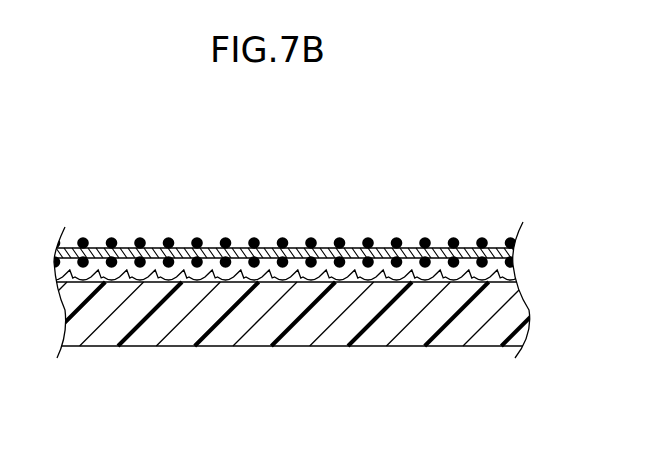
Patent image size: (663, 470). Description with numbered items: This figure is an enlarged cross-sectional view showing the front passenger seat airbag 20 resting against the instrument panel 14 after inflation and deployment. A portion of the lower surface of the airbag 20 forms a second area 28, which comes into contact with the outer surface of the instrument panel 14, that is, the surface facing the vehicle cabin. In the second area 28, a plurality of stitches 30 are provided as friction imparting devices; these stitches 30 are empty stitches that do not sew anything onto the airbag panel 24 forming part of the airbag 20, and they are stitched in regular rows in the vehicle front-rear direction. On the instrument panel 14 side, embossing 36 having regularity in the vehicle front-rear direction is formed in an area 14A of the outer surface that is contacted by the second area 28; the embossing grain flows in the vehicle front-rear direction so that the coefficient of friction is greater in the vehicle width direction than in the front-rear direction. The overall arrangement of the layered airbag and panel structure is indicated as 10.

The laminated article 10 is at (380, 205).
The front passenger seat airbag 20 is at (187, 241).
The airbag panel 24 is at (498, 247).
The second area 28 is at (328, 233).
The stitches 30 is at (256, 240).
The embossing 36 is at (430, 277).
The instrument panel 14 is at (293, 347).
The area 14A is at (213, 347).